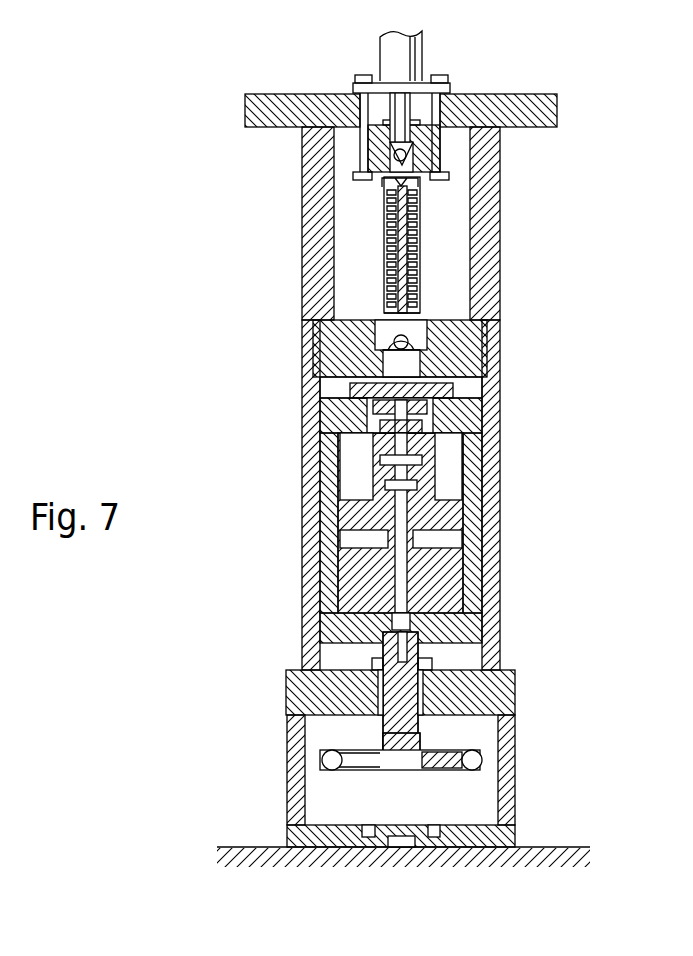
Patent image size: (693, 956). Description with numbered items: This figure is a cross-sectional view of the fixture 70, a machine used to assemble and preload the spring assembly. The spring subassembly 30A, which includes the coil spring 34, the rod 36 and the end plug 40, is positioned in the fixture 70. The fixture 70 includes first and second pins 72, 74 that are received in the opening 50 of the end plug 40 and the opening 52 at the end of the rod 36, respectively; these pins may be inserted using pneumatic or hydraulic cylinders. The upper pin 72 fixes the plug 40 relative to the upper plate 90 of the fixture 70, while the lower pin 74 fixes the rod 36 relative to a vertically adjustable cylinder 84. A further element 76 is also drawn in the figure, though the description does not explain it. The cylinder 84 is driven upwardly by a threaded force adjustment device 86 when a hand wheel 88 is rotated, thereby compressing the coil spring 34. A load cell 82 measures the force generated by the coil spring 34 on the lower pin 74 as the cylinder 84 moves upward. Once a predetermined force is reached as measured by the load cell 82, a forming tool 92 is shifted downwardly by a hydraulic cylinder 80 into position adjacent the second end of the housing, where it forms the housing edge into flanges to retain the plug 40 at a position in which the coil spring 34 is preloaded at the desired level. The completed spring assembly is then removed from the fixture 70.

The subassembly 30A is at (418, 248).
The coil spring 34 is at (382, 247).
The rod 36 is at (386, 297).
The end plug 40 is at (442, 158).
The opening 50 is at (410, 142).
The opening 52 is at (423, 322).
The fixture 70 is at (503, 437).
The first pin 72 is at (403, 149).
The second pin 74 is at (408, 345).
The spring housing 76 is at (383, 183).
The hydraulic cylinder 80 is at (387, 57).
The load cell 82 is at (435, 460).
The vertically adjustable cylinder 84 is at (452, 577).
The threaded force adjustment device 86 is at (425, 690).
The hand wheel 88 is at (467, 771).
The upper plate 90 is at (557, 110).
The forming tool 92 is at (453, 152).